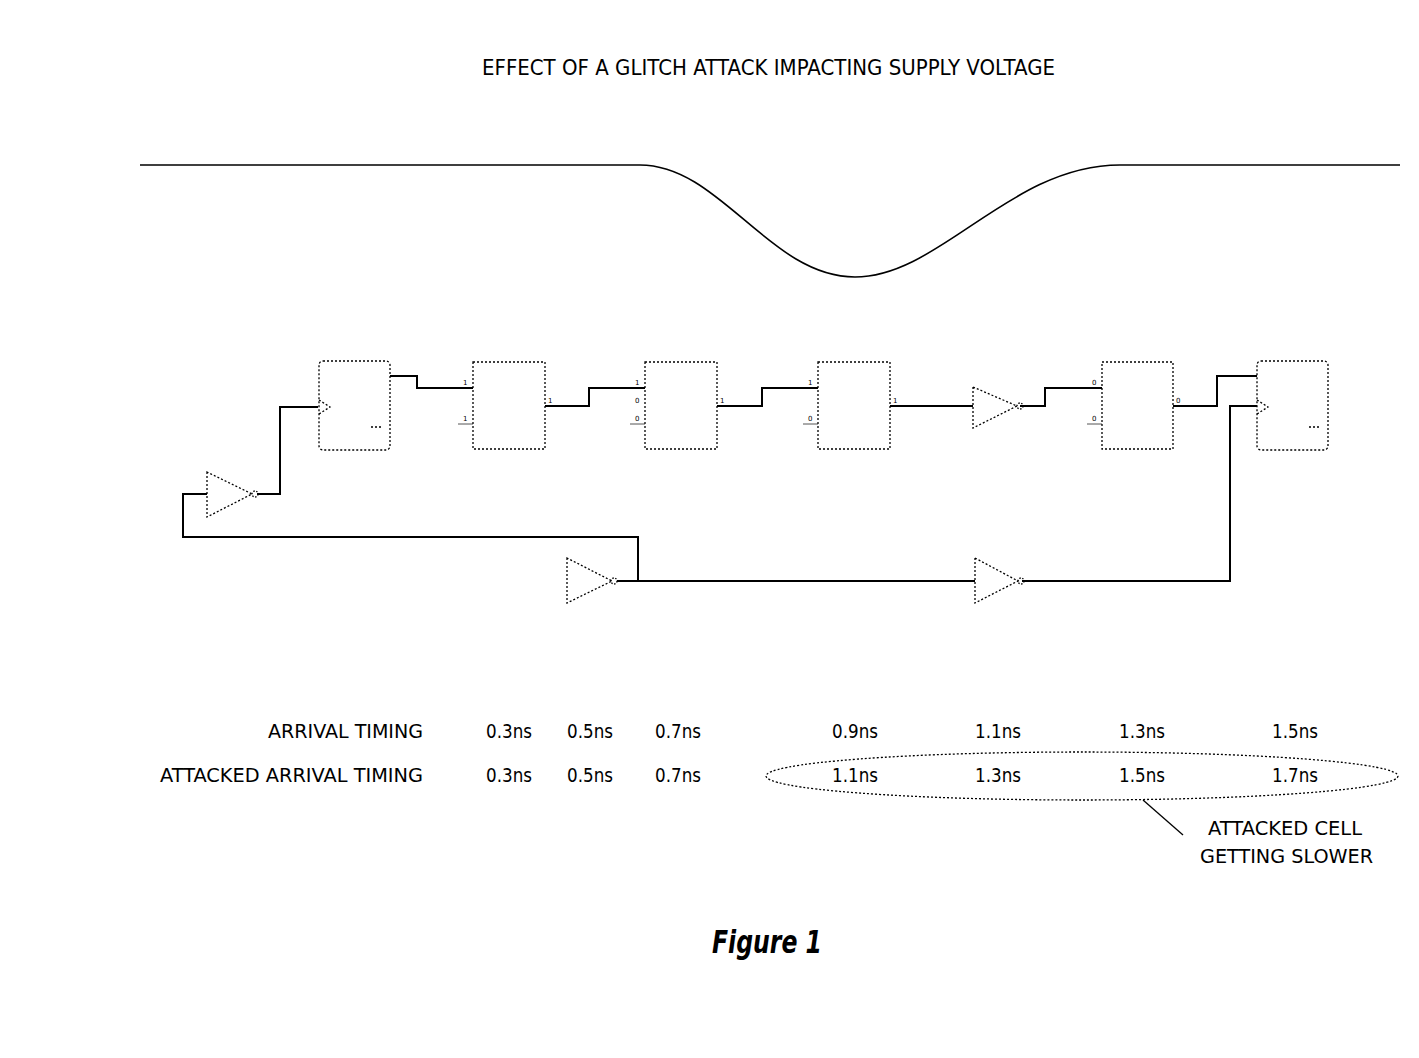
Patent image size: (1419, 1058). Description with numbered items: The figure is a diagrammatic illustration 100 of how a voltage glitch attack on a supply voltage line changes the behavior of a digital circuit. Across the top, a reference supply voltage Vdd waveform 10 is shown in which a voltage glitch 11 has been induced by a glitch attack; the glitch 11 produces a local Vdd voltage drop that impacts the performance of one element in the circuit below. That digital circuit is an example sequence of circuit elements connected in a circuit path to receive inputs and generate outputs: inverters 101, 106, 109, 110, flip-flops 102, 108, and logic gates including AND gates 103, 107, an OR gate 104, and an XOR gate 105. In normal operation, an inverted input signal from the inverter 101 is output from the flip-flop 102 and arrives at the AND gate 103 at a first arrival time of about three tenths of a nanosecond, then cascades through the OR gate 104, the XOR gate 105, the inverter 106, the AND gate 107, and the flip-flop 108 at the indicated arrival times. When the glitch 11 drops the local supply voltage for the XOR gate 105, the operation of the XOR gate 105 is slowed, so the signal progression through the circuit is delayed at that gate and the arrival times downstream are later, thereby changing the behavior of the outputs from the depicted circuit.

The diagrammatic illustration 100 is at (188, 62).
The reference supply voltage Vdd waveform 10 is at (258, 165).
The voltage glitch 11 is at (857, 277).
The inverter 101 is at (210, 472).
The flip-flop 102 is at (353, 361).
The AND gate 103 is at (509, 362).
The OR gate 104 is at (681, 362).
The XOR gate 105 is at (856, 362).
The inverter 106 is at (975, 387).
The AND gate 107 is at (1139, 362).
The flip-flop 108 is at (1296, 361).
The inverter 109 is at (587, 595).
The inverter 110 is at (995, 593).